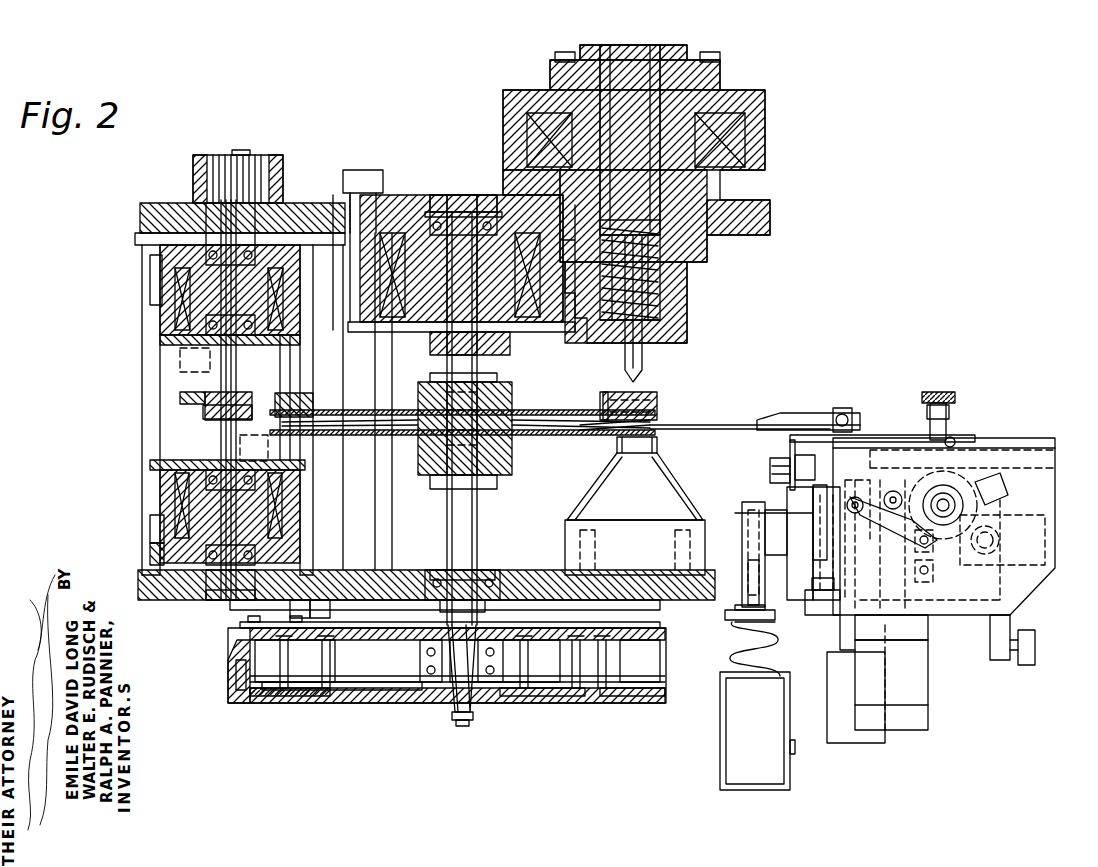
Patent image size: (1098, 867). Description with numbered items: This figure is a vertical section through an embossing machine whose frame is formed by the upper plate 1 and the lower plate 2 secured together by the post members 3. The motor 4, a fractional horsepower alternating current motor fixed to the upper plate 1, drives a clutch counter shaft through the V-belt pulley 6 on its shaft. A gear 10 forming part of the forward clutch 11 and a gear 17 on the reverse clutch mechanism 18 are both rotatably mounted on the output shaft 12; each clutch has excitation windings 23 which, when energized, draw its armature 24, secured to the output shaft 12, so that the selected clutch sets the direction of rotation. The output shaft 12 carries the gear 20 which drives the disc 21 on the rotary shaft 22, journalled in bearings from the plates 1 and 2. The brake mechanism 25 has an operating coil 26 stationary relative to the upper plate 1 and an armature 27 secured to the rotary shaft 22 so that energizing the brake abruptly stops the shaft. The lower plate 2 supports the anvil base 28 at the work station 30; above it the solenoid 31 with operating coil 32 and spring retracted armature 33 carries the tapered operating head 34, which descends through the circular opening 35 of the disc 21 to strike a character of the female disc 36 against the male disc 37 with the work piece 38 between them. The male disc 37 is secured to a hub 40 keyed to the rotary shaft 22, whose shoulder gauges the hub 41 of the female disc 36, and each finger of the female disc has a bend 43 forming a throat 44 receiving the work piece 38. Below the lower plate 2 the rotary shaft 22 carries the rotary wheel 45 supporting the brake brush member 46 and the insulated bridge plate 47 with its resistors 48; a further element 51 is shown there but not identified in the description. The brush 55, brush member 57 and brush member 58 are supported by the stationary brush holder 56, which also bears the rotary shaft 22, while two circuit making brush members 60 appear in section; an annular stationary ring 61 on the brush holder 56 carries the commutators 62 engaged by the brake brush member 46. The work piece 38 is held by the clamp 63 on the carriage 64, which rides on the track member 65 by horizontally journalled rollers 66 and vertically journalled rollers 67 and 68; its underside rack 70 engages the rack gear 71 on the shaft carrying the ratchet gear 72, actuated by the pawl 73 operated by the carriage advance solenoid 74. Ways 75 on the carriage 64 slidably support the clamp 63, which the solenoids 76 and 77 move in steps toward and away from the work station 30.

The upper plate 1 is at (162, 215).
The lower plate 2 is at (155, 598).
The post members 3 is at (360, 175).
The motor 4 is at (162, 378).
The V-belt pulley 6 is at (215, 165).
The gear 10 is at (160, 522).
The forward clutch 11 is at (162, 565).
The output shaft 12 is at (234, 376).
The gear 17 is at (160, 286).
The reverse clutch mechanism 18 is at (170, 338).
The gear 20 is at (182, 398).
The disc 21 is at (500, 394).
The rotary shaft 22 is at (464, 538).
The excitation windings 23 is at (172, 343).
The armature 24 is at (270, 340).
The brake mechanism 25 is at (393, 215).
The operating coil 26 is at (395, 242).
The armature 27 is at (552, 330).
The anvil base 28 is at (605, 470).
The work station 30 is at (612, 449).
The solenoid 31 is at (715, 86).
The operating coil 32 is at (745, 133).
The spring retracted armature 33 is at (630, 188).
The operating head 34 is at (640, 362).
The circular opening 35 is at (656, 400).
The female disc 36 is at (540, 422).
The male disc 37 is at (530, 435).
The work piece 38 is at (728, 427).
The hub 40 is at (430, 458).
The hub 41 is at (432, 420).
The bend 43 is at (610, 420).
The throat 44 is at (645, 430).
The rotary wheel 45 is at (493, 693).
The brake brush member 46 is at (236, 646).
The insulated bridge plate 47 is at (302, 680).
The resistors 48 is at (550, 688).
The bar 51 is at (643, 690).
The brush 55 is at (287, 668).
The brush holder 56 is at (315, 616).
The brush member 57 is at (625, 660).
The brush member 58 is at (525, 660).
The brush member 60 is at (333, 662).
The annular stationary ring 61 is at (240, 616).
The commutators 62 is at (262, 610).
The clamp 63 is at (788, 420).
The carriage 64 is at (1005, 447).
The track member 65 is at (790, 502).
The horizontally journalled rollers 66 is at (790, 452).
The vertically journalled rollers 67 is at (778, 487).
The vertically journalled rollers 68 is at (813, 600).
The rack 70 is at (820, 487).
The rack gear 71 is at (765, 515).
The ratchet gear 72 is at (752, 540).
The pawl 73 is at (732, 615).
The carriage advance solenoid 74 is at (778, 712).
The ways 75 is at (958, 443).
The solenoid 76 is at (920, 716).
The solenoid 77 is at (915, 633).